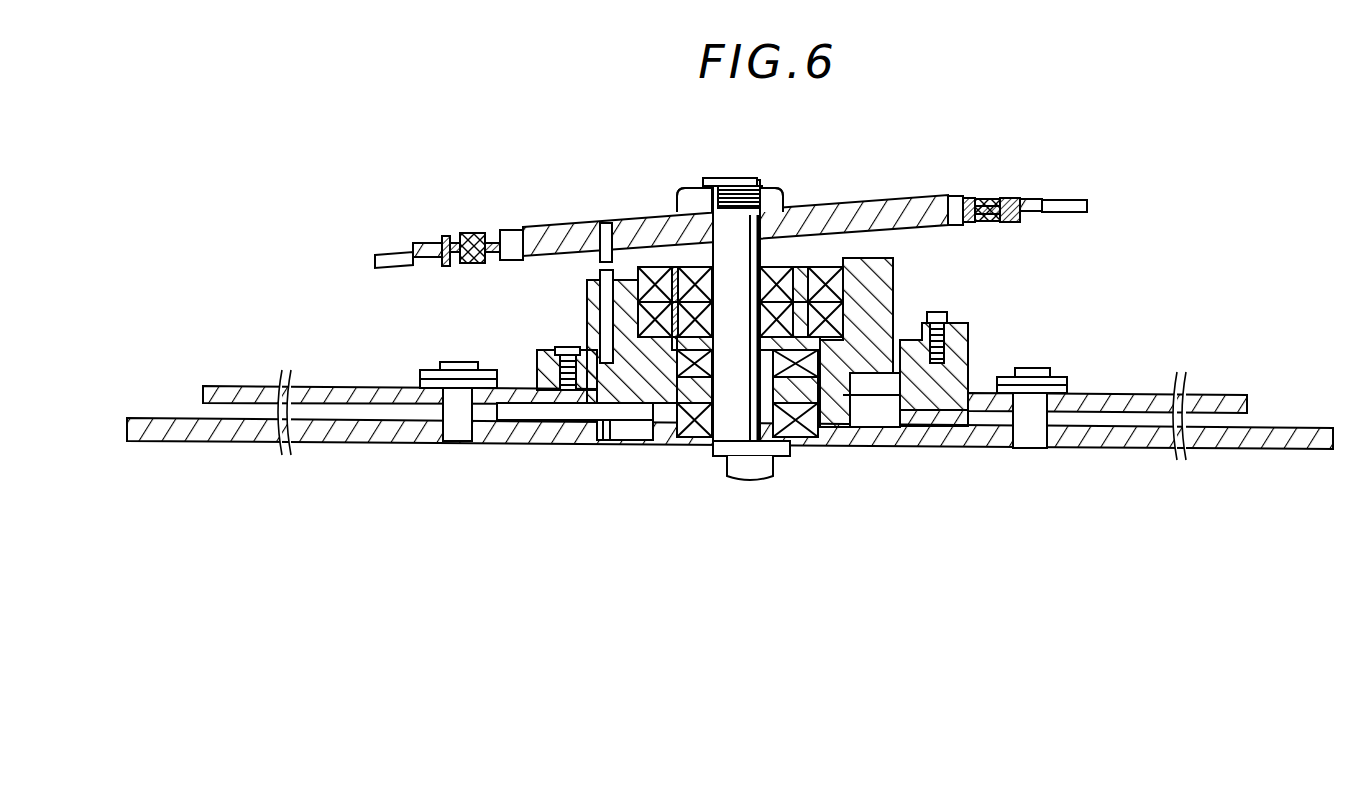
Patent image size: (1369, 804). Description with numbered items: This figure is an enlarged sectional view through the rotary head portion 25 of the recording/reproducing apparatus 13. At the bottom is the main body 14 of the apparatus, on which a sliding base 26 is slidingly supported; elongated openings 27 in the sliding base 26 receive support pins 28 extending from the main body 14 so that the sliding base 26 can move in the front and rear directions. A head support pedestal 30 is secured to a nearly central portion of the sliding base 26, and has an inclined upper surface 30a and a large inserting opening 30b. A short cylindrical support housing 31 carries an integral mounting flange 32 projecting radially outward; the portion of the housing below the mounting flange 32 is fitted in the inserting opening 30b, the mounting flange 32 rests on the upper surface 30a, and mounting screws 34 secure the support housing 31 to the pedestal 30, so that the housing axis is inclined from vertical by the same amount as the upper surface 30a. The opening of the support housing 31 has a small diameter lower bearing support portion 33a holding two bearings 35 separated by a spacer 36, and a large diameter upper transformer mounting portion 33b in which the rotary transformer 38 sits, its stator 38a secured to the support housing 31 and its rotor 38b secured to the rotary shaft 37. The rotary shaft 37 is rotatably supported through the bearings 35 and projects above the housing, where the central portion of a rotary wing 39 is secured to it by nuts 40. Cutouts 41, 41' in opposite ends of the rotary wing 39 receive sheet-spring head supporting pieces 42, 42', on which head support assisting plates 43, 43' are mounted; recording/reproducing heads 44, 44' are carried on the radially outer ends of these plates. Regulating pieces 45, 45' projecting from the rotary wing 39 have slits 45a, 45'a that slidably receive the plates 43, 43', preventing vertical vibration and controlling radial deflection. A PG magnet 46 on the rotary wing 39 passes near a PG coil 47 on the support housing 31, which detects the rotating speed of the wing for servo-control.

The recording/reproducing apparatus 13 is at (240, 208).
The main body 14 is at (1158, 432).
The rotary head portion 25 is at (552, 130).
The sliding base 26 is at (1134, 394).
The elongated opening 27 is at (478, 395).
The support pin 28 is at (455, 362).
The head support pedestal 30 is at (965, 380).
The upper surface 30a is at (590, 352).
The inserting opening 30b is at (866, 428).
The support housing 31 is at (895, 262).
The mounting flange 32 is at (540, 358).
The bearing support portion 33a is at (690, 448).
The transformer mounting portion 33b is at (845, 260).
The mounting screw 34 is at (556, 345).
The bearing 35 is at (820, 440).
The spacer 36 is at (780, 450).
The rotary shaft 37 is at (740, 186).
The rotary transformer 38 is at (793, 205).
The stator 38a is at (826, 205).
The rotor 38b is at (678, 205).
The rotary wing 39 is at (562, 228).
The nut 40 is at (703, 182).
The cutout 41 is at (522, 224).
The cutout 41' is at (924, 190).
The head supporting piece 42 is at (447, 212).
The head supporting piece 42' is at (993, 168).
The head support assisting plate 43 is at (389, 228).
The head support assisting plate 43' is at (1070, 173).
The recording/reproducing head 44 is at (365, 253).
The recording/reproducing head 44' is at (1090, 219).
The regulating piece 45 is at (460, 192).
The slit 45a is at (452, 233).
The regulating piece 45' is at (977, 178).
The slit 45'a is at (1008, 144).
The PG magnet 46 is at (606, 222).
The PG coil 47 is at (600, 285).